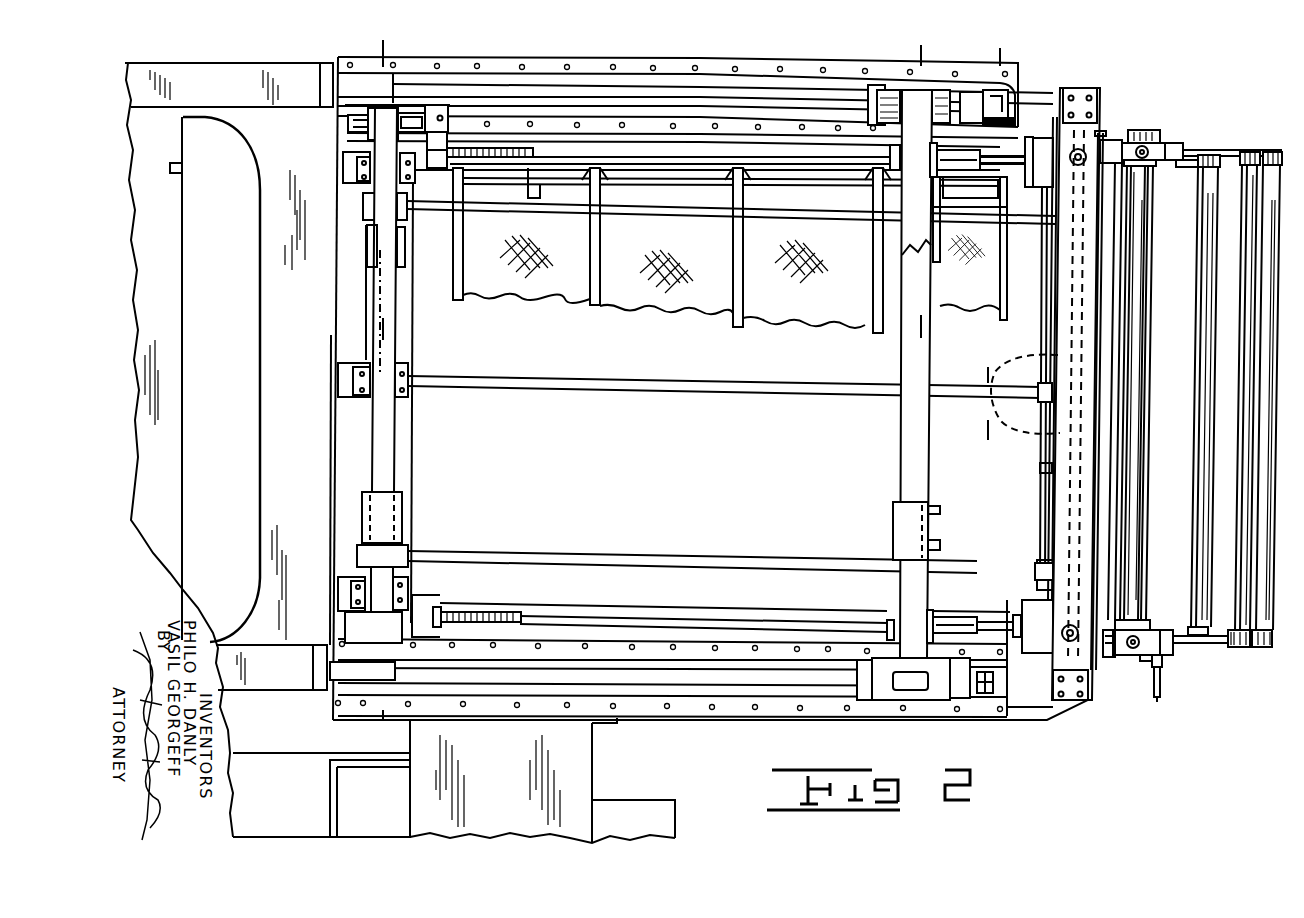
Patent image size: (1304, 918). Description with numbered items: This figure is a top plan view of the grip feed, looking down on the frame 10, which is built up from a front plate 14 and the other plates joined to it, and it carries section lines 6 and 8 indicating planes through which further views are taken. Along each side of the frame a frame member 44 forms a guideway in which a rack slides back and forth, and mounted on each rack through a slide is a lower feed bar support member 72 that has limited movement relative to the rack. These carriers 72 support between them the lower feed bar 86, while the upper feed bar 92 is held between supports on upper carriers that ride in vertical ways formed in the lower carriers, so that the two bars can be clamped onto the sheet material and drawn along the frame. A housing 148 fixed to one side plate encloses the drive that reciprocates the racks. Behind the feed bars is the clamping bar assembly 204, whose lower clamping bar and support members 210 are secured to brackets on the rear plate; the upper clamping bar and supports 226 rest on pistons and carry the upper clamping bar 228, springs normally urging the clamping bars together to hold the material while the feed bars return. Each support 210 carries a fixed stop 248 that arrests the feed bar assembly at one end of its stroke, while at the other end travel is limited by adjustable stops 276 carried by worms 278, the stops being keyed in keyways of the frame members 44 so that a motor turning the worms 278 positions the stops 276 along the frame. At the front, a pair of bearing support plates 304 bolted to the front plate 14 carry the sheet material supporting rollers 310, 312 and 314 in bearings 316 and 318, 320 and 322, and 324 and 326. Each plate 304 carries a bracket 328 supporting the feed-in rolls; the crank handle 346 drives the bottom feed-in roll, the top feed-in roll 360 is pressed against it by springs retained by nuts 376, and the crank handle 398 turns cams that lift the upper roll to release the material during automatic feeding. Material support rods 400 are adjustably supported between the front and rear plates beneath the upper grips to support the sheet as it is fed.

The section line 6- 6 is at (1000, 57).
The section line 8- 8 is at (921, 53).
The frame 10 is at (383, 47).
The front plate 14 is at (1040, 490).
The frame member 44 is at (795, 133).
The lower feed bar support member 72 is at (868, 103).
The lower feed bar 86 is at (903, 450).
The upper feed bar 92 is at (912, 196).
The housing 148 is at (592, 777).
The clamping bar assembly 204 is at (419, 358).
The lower clamping bar and support member 210 is at (410, 176).
The upper clamping bar and support 226 is at (348, 127).
The upper clamping bar 228 is at (380, 446).
The fixed stop 248 is at (440, 110).
The adjustable stop 276 is at (973, 172).
The worm 278 is at (1007, 152).
The bearing support plate 304 is at (1222, 125).
The sheet material supporting roller 310 is at (1263, 458).
The sheet material supporting roller 312 is at (1243, 385).
The sheet material supporting roller 314 is at (1210, 290).
The bearing 316 is at (1258, 645).
The bearing 318 is at (1270, 150).
The bearing 320 is at (1232, 650).
The bearing 322 is at (1243, 148).
The bearing 324 is at (1150, 632).
The bearing 326 is at (1197, 164).
The bracket 328 is at (1163, 146).
The crank handle 346 is at (1160, 700).
The top feed-in roll 360 is at (1150, 240).
The nut 376 is at (1125, 655).
The crank handle 398 is at (1162, 665).
The material support rod 400 is at (648, 212).